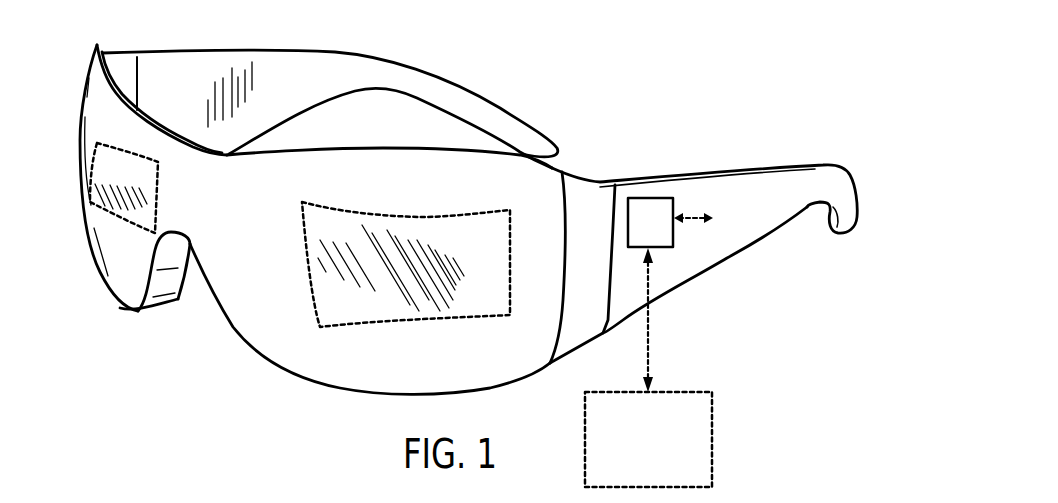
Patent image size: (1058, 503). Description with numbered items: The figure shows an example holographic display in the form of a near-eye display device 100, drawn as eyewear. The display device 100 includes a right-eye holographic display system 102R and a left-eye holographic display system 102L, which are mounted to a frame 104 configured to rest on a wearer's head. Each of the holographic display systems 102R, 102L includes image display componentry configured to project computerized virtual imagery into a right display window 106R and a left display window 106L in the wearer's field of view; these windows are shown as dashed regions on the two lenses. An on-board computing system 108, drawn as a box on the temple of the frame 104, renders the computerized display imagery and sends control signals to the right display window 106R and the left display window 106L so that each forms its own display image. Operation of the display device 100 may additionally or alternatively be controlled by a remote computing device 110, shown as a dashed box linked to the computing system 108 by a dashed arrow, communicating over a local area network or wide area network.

The near-eye display device 100 is at (503, 42).
The right-eye holographic display system 102R is at (114, 241).
The left-eye holographic display system 102L is at (449, 336).
The frame 104 is at (563, 170).
The right display window 106R is at (145, 181).
The left display window 106L is at (497, 250).
The on-board computing system 108 is at (647, 198).
The remote computing device 110 is at (700, 474).